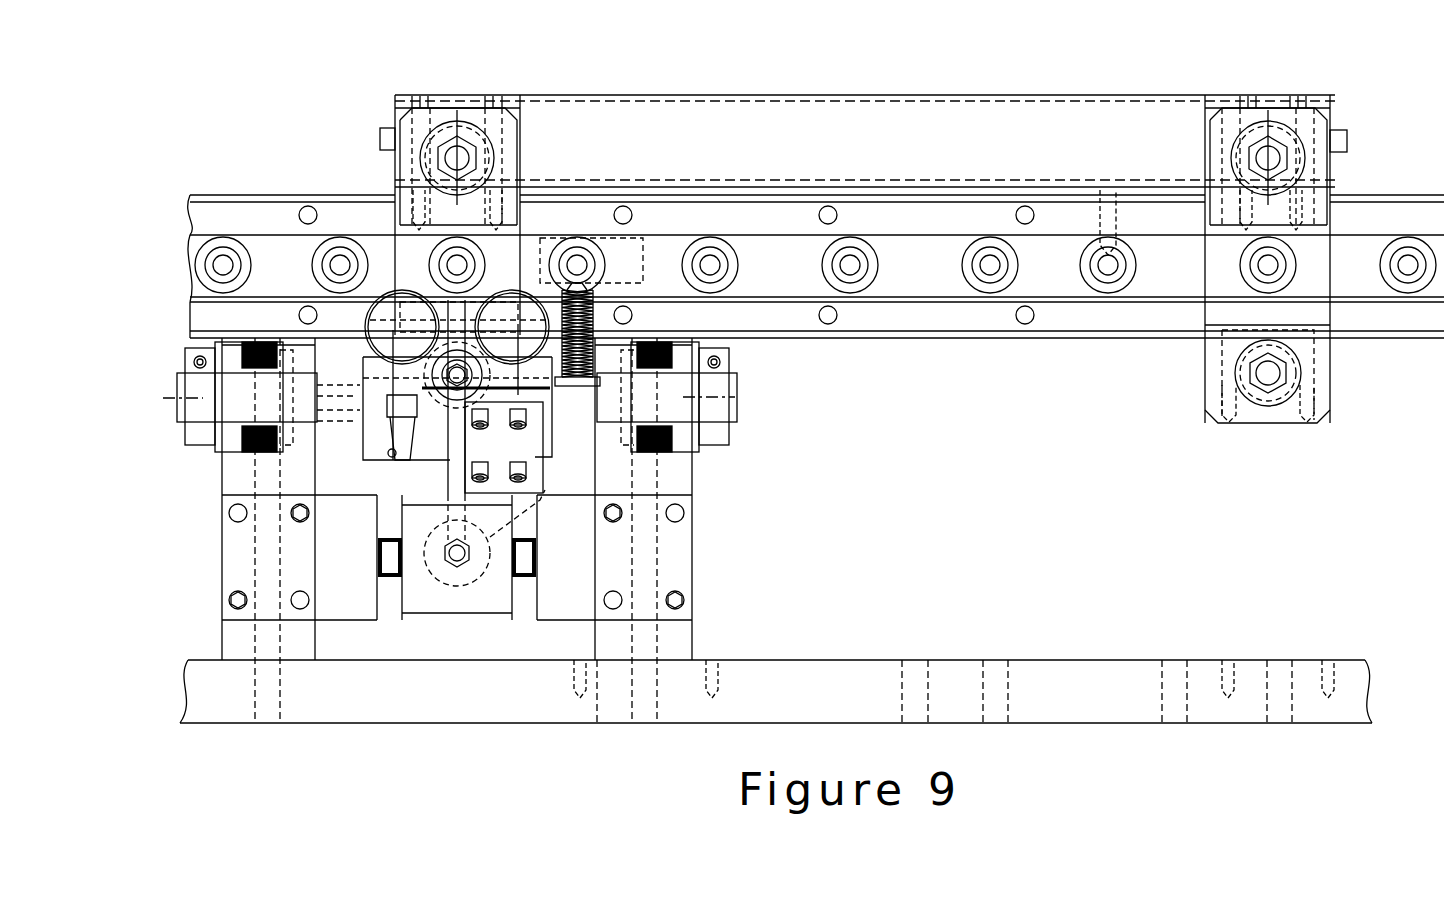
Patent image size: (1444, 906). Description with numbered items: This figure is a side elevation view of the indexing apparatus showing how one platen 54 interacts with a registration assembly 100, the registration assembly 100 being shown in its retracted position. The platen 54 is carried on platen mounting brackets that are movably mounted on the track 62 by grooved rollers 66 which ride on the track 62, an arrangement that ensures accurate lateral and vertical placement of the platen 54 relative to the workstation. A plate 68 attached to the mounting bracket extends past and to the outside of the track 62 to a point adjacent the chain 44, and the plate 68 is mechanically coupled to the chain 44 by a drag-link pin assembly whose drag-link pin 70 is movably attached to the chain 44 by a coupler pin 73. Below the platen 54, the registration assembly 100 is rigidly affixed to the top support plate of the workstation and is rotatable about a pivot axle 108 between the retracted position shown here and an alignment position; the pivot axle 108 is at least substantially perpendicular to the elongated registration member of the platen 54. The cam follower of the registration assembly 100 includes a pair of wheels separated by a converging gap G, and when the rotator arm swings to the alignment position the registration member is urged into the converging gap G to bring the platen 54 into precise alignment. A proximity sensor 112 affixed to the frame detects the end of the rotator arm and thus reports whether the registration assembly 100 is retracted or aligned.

The platen 54 is at (865, 141).
The chain 44 is at (1020, 282).
The coupler pin 73 is at (457, 265).
The drag-link pin 70 is at (600, 282).
The track 62 is at (1088, 340).
The roller 66 is at (478, 143).
The registration assembly 100 is at (838, 488).
The converging gap G is at (455, 330).
The plate 68 is at (577, 390).
The proximity sensor 112 is at (393, 440).
The pivot axle 108 is at (738, 407).